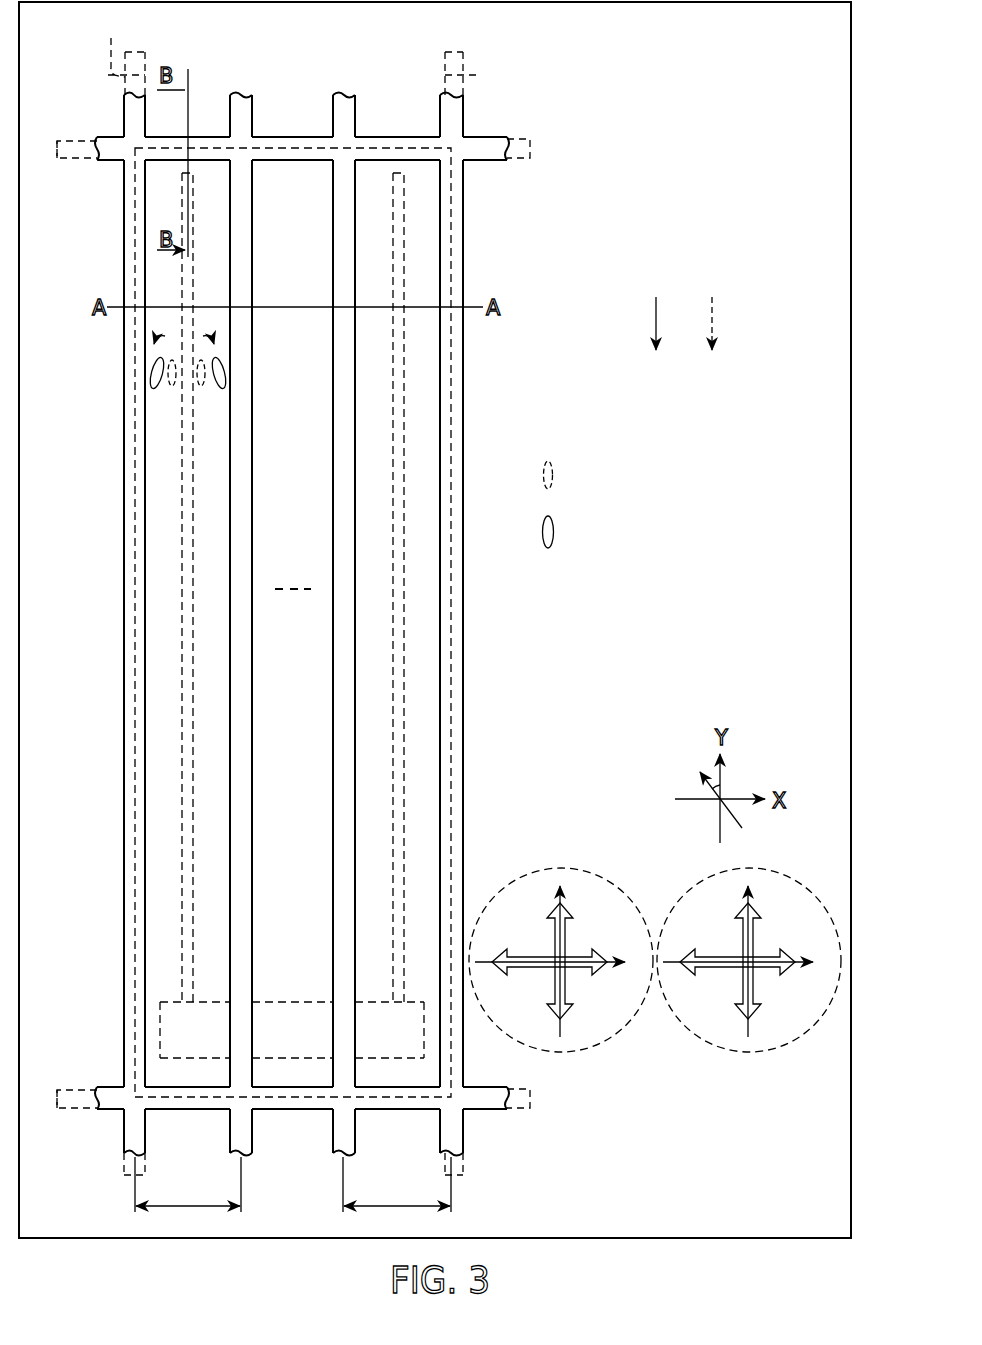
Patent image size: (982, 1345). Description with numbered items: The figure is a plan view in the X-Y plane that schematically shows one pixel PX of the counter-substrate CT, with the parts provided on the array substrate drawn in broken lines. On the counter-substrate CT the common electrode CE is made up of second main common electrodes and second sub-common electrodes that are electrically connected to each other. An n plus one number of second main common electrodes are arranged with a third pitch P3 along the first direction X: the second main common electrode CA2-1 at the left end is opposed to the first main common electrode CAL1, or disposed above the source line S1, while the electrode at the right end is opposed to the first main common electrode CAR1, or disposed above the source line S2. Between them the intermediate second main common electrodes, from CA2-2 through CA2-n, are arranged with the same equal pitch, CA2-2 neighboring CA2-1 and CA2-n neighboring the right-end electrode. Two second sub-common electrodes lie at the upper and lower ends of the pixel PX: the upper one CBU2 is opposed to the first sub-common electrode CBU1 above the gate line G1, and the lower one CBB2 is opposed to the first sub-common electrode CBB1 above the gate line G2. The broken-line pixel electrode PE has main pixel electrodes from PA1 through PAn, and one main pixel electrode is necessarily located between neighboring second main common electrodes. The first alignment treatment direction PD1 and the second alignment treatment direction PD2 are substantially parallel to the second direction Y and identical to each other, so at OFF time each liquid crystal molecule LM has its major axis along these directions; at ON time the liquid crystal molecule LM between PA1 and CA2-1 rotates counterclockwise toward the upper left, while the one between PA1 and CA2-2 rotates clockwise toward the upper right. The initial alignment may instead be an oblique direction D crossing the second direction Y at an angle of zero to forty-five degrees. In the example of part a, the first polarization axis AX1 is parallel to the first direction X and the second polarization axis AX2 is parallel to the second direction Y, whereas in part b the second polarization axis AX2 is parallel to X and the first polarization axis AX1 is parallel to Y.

The first main common electrode CAL1 is at (86, 75).
The first main common electrode CAR1 is at (463, 78).
The source line S1 is at (145, 63).
The source line S2 is at (445, 61).
The counter-substrate CT is at (580, 112).
The second sub-common electrode CBU2 is at (296, 135).
The first sub-common electrode CBU1 is at (530, 150).
The second sub-common electrode CBB2 is at (298, 1110).
The first sub-common electrode CBB1 is at (530, 1098).
The pixel PX is at (453, 145).
The gate line G1 is at (57, 150).
The gate line G2 is at (57, 1100).
The second alignment treatment direction PD2 is at (608, 323).
The first alignment treatment direction PD1 is at (760, 323).
The pixel electrode PE is at (407, 411).
The main pixel electrode PA1 is at (190, 445).
The main pixel electrode PAn is at (397, 455).
The second main common electrode CA2-1 is at (124, 647).
The second main common electrode CA2-2 is at (243, 541).
The second main common electrode CA2-n is at (333, 667).
The common electrode CE is at (468, 727).
The liquid crystal molecule LM is at (481, 452).
The third pitch P3 is at (293, 1184).
The initial alignment direction D is at (715, 785).
The first polarization axis AX1 is at (586, 972).
The second polarization axis AX2 is at (555, 926).
The example of polarizer arrangement a is at (564, 970).
The example of polarizer arrangement b is at (743, 926).